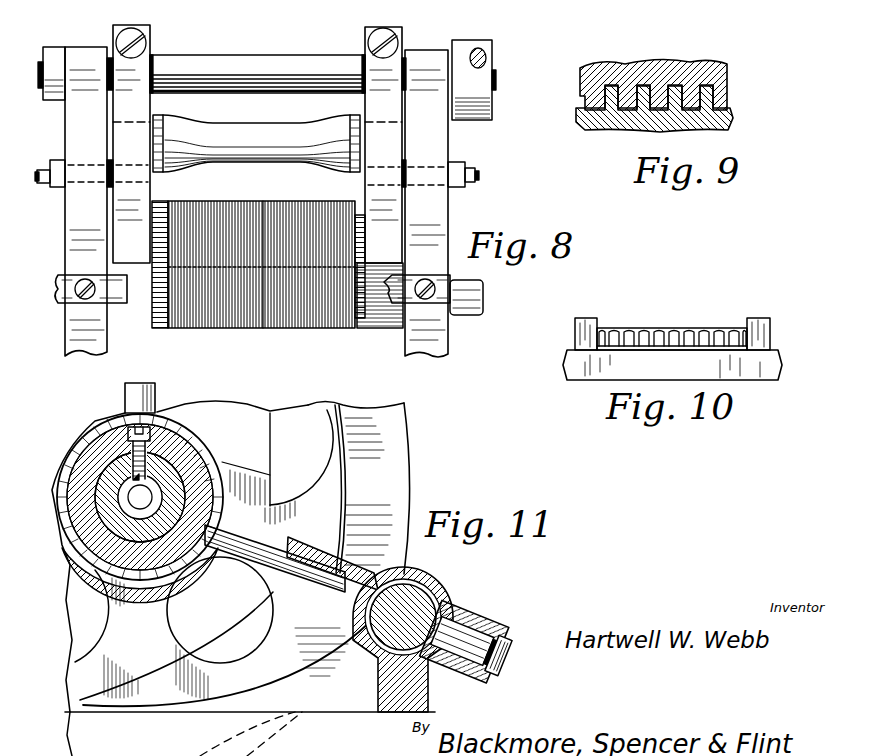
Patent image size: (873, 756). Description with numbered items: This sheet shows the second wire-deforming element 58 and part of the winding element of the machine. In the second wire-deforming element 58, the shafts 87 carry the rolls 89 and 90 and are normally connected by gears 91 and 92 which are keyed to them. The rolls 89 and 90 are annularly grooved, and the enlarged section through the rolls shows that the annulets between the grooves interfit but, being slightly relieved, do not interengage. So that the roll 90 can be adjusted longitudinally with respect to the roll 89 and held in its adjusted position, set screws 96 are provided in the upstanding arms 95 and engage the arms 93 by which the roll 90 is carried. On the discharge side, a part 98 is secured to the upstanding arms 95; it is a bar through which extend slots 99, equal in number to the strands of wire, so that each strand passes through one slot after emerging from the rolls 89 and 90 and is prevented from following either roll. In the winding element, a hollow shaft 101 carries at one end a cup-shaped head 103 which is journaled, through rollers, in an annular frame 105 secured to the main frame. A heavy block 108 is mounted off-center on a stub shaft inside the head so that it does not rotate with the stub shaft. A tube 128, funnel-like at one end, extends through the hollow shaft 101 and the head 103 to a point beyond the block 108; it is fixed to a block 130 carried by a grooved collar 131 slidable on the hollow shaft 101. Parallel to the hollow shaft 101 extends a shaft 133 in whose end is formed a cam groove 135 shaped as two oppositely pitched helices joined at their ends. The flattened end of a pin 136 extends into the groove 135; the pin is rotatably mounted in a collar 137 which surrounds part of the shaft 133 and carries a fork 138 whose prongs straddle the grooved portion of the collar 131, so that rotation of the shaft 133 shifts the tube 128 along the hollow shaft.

In FIG. 8, the second wire-deforming element 58 is at (447, 343).
In FIG. 8, the shafts 87 is at (470, 292).
In FIG. 8, the roll 89 is at (285, 330).
In FIG. 9, the roll 89 is at (720, 116).
In FIG. 8, the roll 90 is at (240, 202).
In FIG. 9, the roll 90 is at (712, 76).
In FIG. 8, the gear 91 is at (163, 318).
In FIG. 8, the gear 92 is at (163, 203).
In FIG. 8, the arm 93 is at (132, 100).
In FIG. 8, the upstanding arms 95 is at (80, 222).
In FIG. 8, the set screws 96 is at (40, 172).
In FIG. 8, the part 98 is at (405, 295).
In FIG. 10, the part 98 is at (578, 332).
In FIG. 10, the slots 99 is at (732, 335).
In FIG. 11, the hollow shaft 101 is at (110, 520).
In FIG. 11, the cup-shaped head 103 is at (335, 488).
In FIG. 11, the annular frame 105 is at (380, 430).
In FIG. 11, the block 108 is at (182, 628).
In FIG. 11, the tube 128 is at (156, 396).
In FIG. 11, the block 130 is at (125, 467).
In FIG. 11, the grooved collar 131 is at (110, 437).
In FIG. 11, the shaft 133 is at (413, 605).
In FIG. 11, the cam groove 135 is at (452, 613).
In FIG. 11, the pin 136 is at (475, 625).
In FIG. 11, the collar 137 is at (410, 580).
In FIG. 11, the fork 138 is at (263, 542).